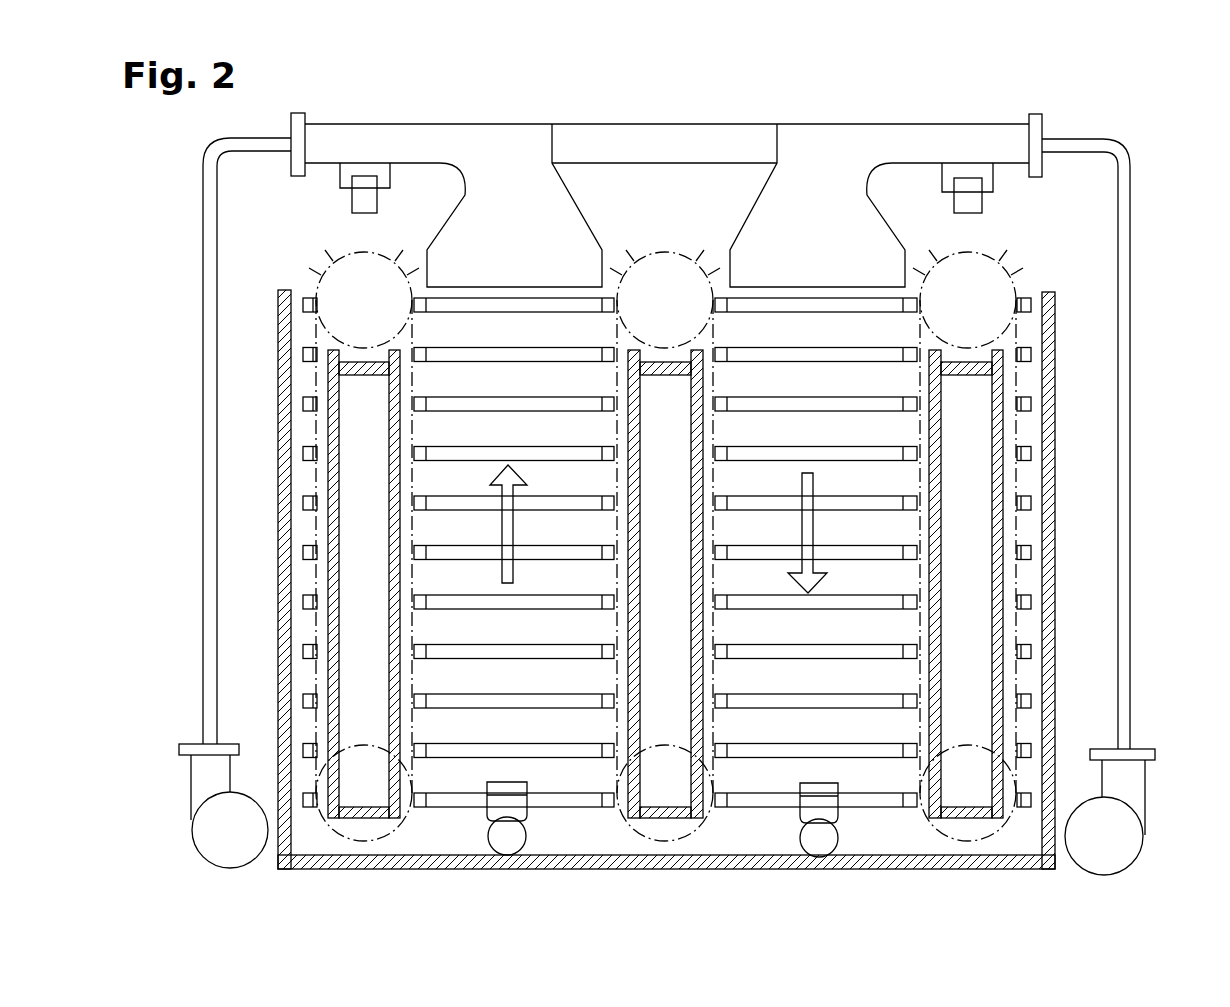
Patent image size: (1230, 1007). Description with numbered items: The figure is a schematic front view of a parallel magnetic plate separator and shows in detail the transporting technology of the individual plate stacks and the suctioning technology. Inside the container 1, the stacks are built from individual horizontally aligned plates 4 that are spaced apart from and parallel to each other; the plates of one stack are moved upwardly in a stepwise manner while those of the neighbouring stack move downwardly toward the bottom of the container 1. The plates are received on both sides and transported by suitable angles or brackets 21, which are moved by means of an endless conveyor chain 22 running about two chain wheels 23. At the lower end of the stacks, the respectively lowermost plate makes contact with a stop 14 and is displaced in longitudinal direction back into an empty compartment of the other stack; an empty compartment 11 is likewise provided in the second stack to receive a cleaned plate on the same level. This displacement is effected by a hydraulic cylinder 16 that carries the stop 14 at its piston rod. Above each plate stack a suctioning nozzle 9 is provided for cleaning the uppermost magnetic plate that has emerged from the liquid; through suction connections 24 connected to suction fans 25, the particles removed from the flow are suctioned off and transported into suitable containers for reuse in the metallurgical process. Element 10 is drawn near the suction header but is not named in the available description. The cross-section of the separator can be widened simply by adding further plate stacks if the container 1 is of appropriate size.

The container 1 is at (337, 869).
The plates 4 is at (553, 748).
The suctioning nozzle 9 is at (506, 193).
The sensor 10 is at (383, 173).
The empty compartment 11 is at (582, 800).
The stop 14 is at (825, 812).
The hydraulic cylinder 16 is at (510, 838).
The angles or brackets 21 is at (1033, 444).
The endless conveyor chain 22 is at (1020, 522).
The chain wheels 23 is at (992, 283).
The suction connections 24 is at (1125, 613).
The suction fans 25 is at (227, 840).